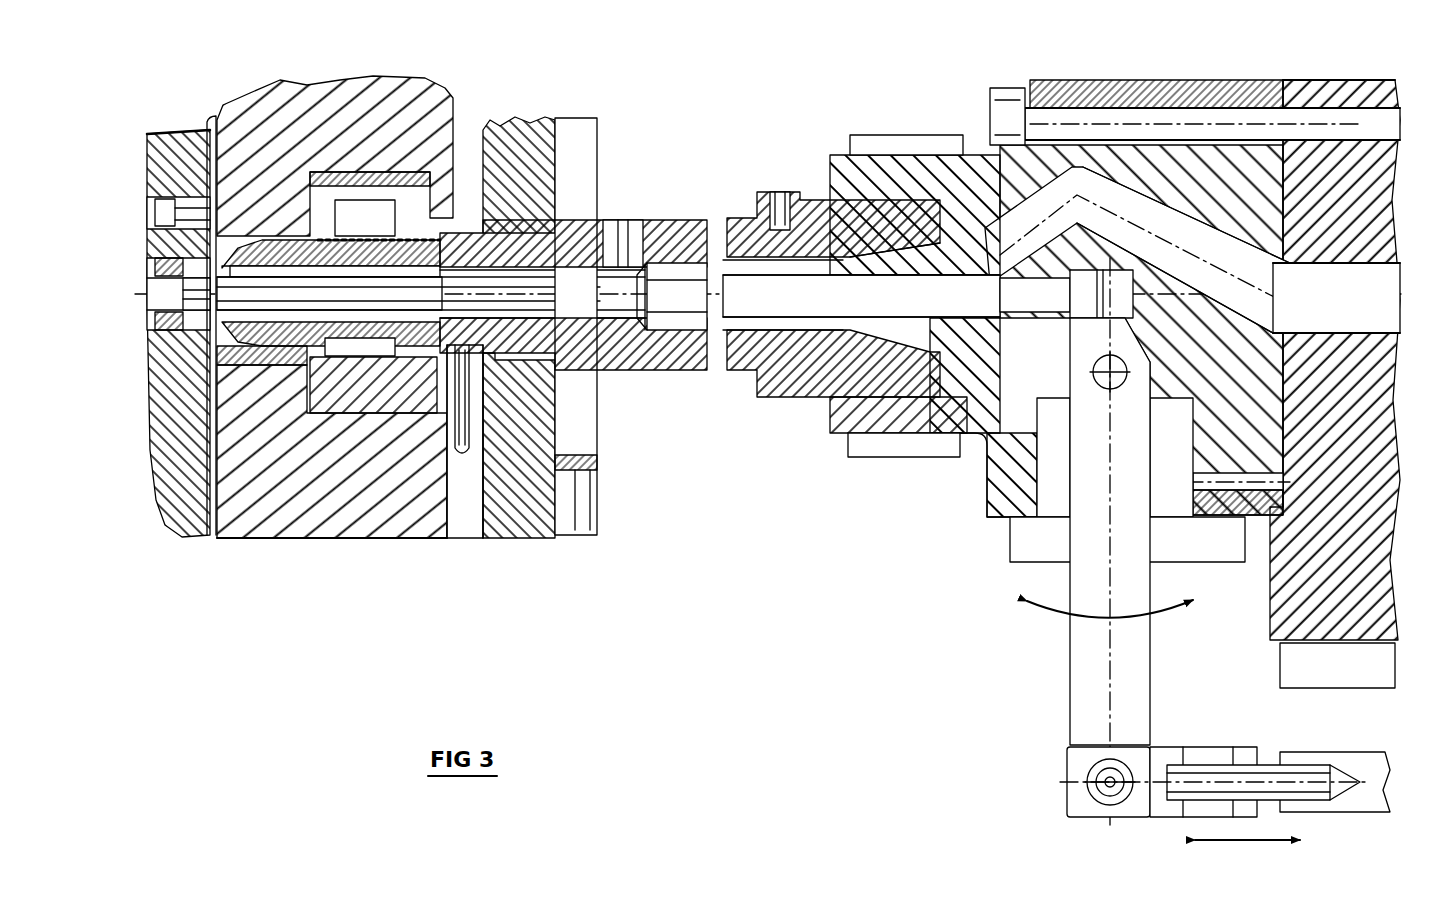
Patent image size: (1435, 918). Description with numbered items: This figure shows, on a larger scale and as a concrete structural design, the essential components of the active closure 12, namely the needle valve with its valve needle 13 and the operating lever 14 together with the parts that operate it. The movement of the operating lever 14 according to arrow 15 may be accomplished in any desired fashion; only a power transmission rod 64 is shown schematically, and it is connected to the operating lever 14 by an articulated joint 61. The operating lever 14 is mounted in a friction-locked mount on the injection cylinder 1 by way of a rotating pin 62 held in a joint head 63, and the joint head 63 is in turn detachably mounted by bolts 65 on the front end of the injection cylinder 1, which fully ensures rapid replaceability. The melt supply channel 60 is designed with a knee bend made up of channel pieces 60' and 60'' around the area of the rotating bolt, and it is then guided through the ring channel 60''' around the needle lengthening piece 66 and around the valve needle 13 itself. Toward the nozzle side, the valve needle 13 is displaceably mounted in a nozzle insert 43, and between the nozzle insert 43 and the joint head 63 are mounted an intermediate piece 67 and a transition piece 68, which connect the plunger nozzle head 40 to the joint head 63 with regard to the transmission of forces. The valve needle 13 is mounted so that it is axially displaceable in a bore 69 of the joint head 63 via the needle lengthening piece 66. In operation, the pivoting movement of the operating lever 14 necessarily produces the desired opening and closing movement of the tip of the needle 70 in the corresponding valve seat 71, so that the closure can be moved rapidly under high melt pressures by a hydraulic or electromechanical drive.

The injection cylinder 1 is at (1179, 350).
The active closure 12 is at (853, 548).
The valve needle 13 is at (613, 373).
The operating lever 14 is at (1084, 670).
The arrow 15 is at (1240, 842).
The plunger nozzle head 40 is at (252, 357).
The nozzle insert 43 is at (300, 412).
The melt supply channel 60 is at (1343, 275).
The channel piece 60' is at (1183, 250).
The channel piece 60'' is at (1137, 250).
The ring channel 60''' is at (895, 259).
The articulated joint 61 is at (1073, 783).
The rotating pin 62 is at (990, 508).
The joint head 63 is at (973, 423).
The power transmission rod 64 is at (1372, 805).
The bolts 65 is at (992, 98).
The needle lengthening piece 66 is at (752, 372).
The intermediate piece 67 is at (533, 233).
The transition piece 68 is at (688, 218).
The bore 69 is at (1025, 318).
The tip of the needle 70 is at (210, 322).
The valve seat 71 is at (200, 322).